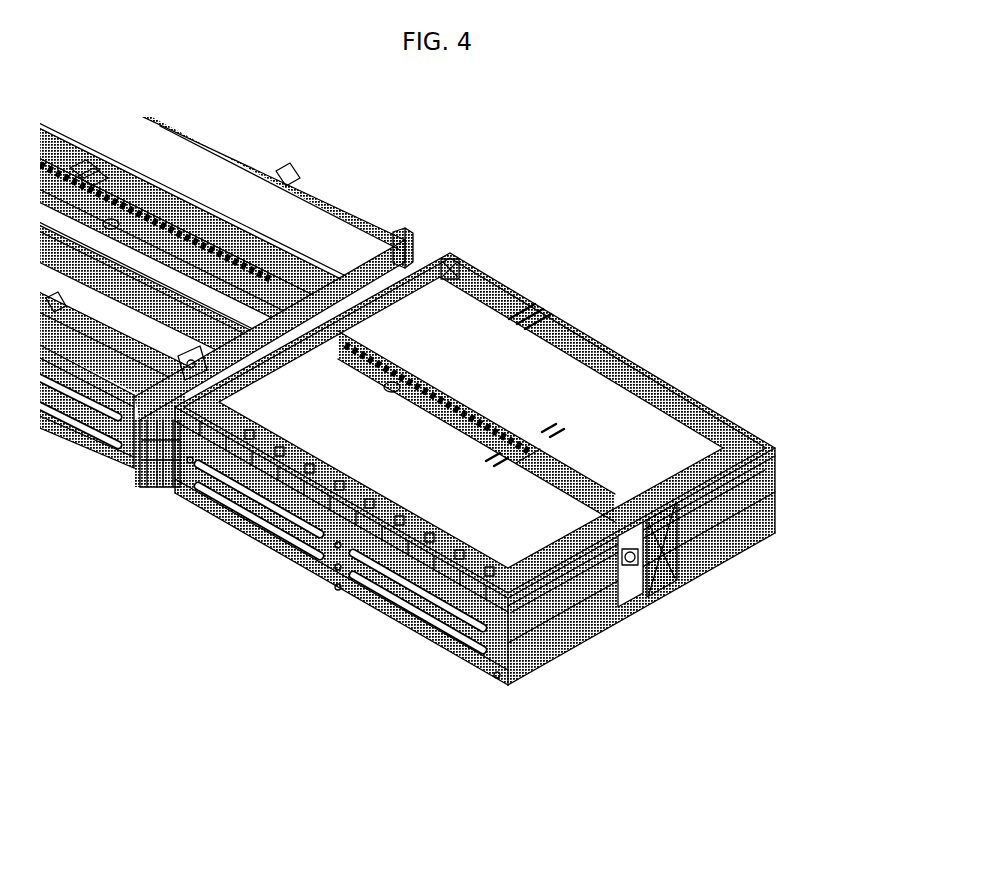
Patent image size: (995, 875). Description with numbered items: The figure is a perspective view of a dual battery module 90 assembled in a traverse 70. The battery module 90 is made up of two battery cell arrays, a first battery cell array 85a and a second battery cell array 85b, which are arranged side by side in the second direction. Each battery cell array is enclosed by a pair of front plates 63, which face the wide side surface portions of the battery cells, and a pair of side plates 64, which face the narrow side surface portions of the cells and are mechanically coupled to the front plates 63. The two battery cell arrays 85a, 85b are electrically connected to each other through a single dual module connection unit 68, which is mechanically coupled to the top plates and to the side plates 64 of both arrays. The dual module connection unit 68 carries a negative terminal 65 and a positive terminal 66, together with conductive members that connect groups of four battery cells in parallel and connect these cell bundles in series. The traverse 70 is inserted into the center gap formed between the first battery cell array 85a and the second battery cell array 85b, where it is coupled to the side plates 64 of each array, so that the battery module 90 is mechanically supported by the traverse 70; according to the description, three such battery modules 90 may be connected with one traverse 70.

The battery module 90 is at (580, 262).
The dual module connection unit 68 is at (624, 410).
The traverse 70 is at (667, 482).
The front plate 63 is at (778, 472).
The side plate 64 is at (403, 590).
The negative terminal 65 is at (212, 458).
The positive terminal 66 is at (175, 455).
The first battery cell array 85a is at (600, 656).
The second battery cell array 85b is at (718, 584).